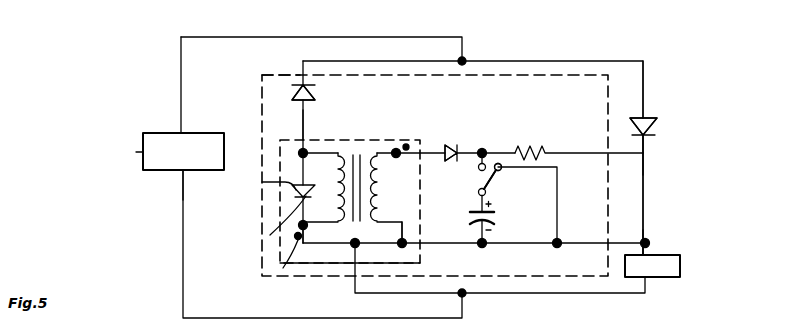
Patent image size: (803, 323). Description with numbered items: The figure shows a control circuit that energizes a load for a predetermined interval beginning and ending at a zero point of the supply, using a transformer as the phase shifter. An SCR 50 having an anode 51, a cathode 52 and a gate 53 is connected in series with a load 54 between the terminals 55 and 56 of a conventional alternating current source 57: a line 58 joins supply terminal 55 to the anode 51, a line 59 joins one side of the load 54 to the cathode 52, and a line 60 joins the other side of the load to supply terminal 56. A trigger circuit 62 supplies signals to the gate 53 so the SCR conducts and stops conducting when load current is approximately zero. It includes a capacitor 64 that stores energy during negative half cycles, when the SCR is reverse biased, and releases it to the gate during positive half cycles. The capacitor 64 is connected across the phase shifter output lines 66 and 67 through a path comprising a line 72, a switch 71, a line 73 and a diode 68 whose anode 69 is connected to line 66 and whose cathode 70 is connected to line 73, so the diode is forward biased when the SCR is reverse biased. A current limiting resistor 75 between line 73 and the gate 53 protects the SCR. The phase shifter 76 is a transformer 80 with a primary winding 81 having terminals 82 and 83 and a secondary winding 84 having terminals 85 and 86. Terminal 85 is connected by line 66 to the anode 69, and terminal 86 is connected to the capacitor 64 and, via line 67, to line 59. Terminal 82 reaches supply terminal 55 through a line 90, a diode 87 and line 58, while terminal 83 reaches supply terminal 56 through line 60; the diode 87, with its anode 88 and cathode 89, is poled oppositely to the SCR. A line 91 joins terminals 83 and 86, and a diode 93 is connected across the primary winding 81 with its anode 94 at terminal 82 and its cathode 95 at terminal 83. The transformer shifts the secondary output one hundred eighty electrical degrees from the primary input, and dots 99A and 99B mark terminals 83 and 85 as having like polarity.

The SCR 50 is at (678, 124).
The anode 51 is at (652, 118).
The cathode 52 is at (648, 138).
The gate 53 is at (643, 160).
The load 54 is at (682, 266).
The terminal 55 is at (186, 133).
The terminal 56 is at (183, 178).
The alternating current source 57 is at (136, 152).
The line 58 is at (318, 37).
The line 59 is at (650, 247).
The line 60 is at (218, 318).
The trigger circuit 62 is at (560, 72).
The capacitor 64 is at (498, 216).
The output line 66 is at (447, 148).
The output line 67 is at (455, 245).
The diode 68 is at (480, 130).
The anode 69 is at (448, 160).
The cathode 70 is at (472, 140).
The switch 71 is at (494, 182).
The line 72 is at (476, 208).
The line 73 is at (500, 162).
The current limiting resistor 75 is at (540, 146).
The phase shifter 76 is at (346, 140).
The transformer 80 is at (361, 152).
The primary winding 81 is at (324, 187).
The terminal 82 is at (310, 150).
The terminal 83 is at (307, 226).
The secondary winding 84 is at (380, 175).
The terminal 85 is at (396, 148).
The terminal 86 is at (400, 240).
The diode 87 is at (270, 91).
The anode 88 is at (296, 98).
The cathode 89 is at (300, 78).
The line 90 is at (303, 122).
The line 91 is at (335, 263).
The diode 93 is at (288, 190).
The anode 94 is at (266, 181).
The cathode 95 is at (270, 235).
The dot 99A is at (283, 268).
The dot 99B is at (414, 140).